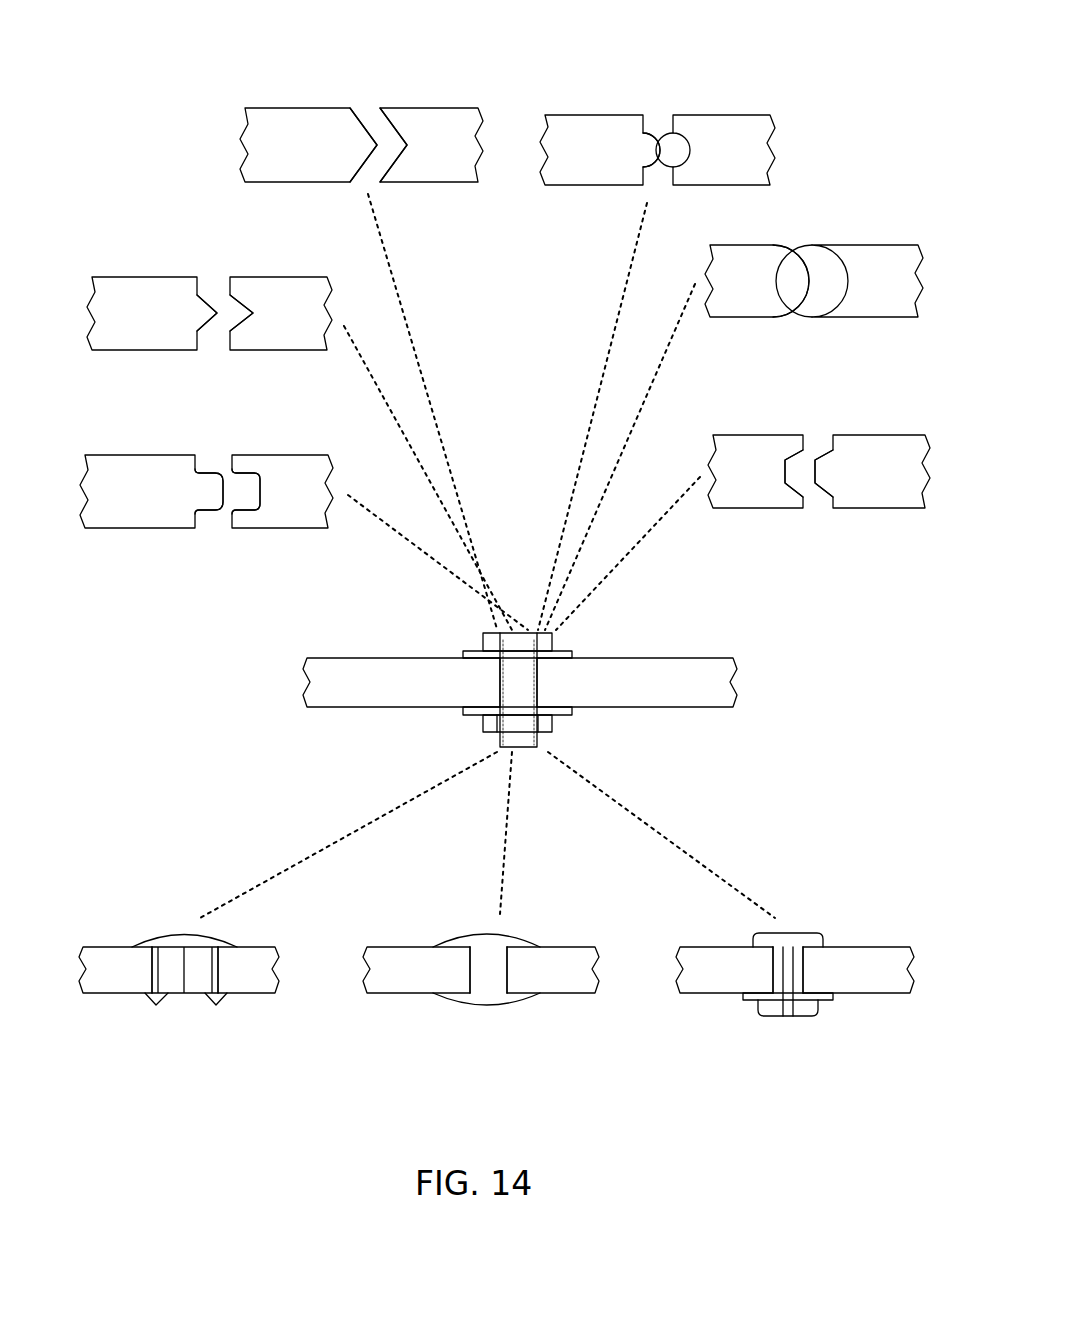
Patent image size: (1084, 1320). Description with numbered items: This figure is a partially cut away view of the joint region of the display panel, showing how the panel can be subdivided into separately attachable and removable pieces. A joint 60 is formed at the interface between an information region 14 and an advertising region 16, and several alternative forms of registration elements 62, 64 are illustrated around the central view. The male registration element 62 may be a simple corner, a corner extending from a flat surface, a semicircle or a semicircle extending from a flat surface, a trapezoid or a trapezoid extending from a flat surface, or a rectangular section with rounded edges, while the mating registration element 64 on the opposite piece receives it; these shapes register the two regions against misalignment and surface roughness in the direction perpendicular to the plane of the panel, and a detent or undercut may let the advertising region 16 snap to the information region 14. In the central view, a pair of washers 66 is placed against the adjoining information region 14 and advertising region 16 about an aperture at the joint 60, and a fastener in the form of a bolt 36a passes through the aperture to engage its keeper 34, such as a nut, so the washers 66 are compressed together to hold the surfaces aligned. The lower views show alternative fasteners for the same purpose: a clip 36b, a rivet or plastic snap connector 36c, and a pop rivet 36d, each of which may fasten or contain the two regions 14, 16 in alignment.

The information region 14 is at (287, 157).
The advertising region 16 is at (422, 157).
The keeper 34 is at (548, 732).
The bolt 36a is at (545, 637).
The clip 36b is at (185, 932).
The rivet or plastic snap connector 36c is at (515, 932).
The pop rivet 36d is at (808, 932).
The joint 60 is at (358, 102).
The male registration element 62 is at (370, 115).
The mating registration element 64 is at (392, 118).
The washers 66 is at (475, 650).